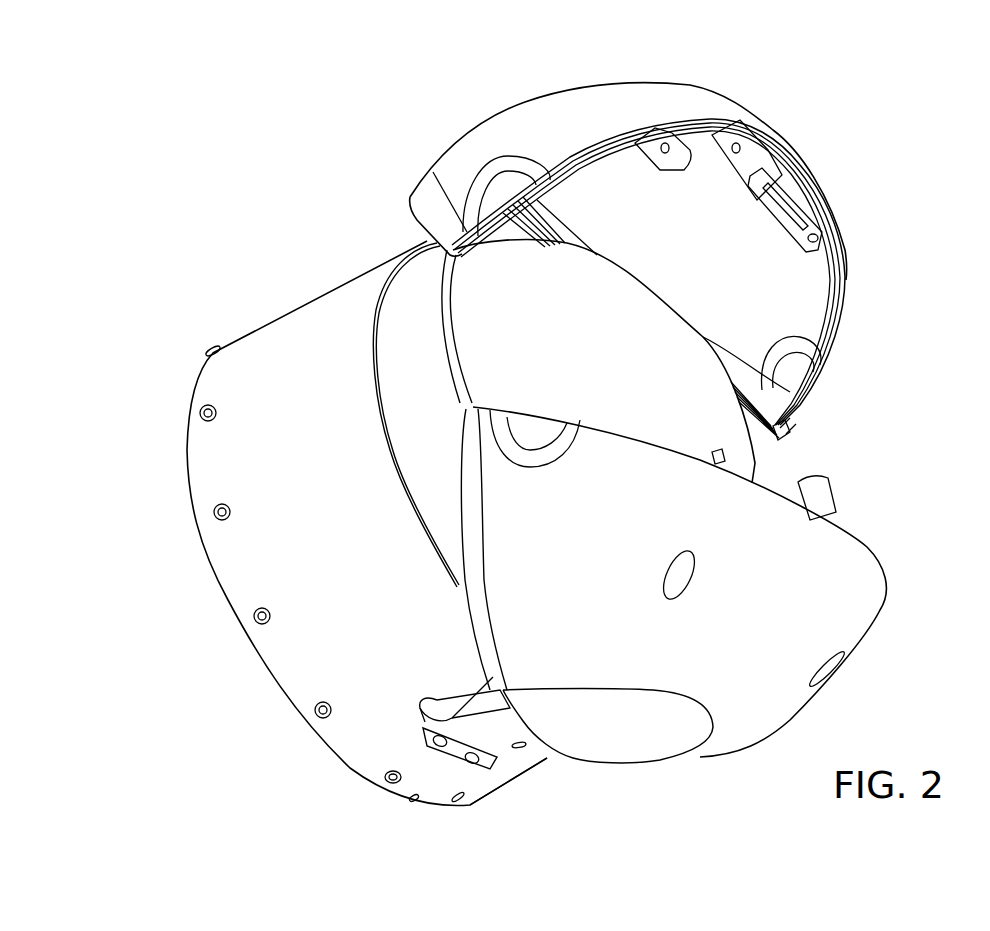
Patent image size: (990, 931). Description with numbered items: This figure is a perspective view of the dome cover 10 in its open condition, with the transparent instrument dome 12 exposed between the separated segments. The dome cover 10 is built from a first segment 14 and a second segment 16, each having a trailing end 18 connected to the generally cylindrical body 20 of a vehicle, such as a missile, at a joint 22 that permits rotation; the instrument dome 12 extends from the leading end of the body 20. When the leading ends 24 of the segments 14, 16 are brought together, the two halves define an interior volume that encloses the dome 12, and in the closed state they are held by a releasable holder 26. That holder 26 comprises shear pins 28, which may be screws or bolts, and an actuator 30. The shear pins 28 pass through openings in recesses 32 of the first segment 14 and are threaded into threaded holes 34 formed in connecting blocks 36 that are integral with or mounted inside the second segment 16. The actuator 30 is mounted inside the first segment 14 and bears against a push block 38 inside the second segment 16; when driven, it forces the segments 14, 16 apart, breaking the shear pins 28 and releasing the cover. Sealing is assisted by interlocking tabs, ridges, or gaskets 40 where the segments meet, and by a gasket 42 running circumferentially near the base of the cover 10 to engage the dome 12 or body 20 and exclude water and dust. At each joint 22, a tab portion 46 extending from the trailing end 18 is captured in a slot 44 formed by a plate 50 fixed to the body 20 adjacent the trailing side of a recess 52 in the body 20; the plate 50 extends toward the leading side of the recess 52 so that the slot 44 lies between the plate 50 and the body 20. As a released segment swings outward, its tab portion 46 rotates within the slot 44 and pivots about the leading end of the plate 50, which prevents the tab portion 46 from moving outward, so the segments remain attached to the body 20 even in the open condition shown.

The dome cover 10 is at (882, 180).
The instrument dome 12 is at (584, 366).
The first segment 14 is at (870, 592).
The second segment 16 is at (468, 152).
The trailing ends 18 is at (396, 199).
The body 20 is at (367, 523).
The joints 22 is at (410, 706).
The leading ends 24 is at (808, 135).
The releasable holder 26 is at (884, 512).
The shear pins 28 is at (714, 450).
The actuator 30 is at (824, 498).
The recesses 32 is at (671, 588).
The threaded holes 34 is at (666, 158).
The connecting blocks 36 is at (645, 138).
The push block 38 is at (730, 158).
The gaskets 40 is at (780, 425).
The gasket 42 is at (776, 436).
The slot 44 is at (420, 719).
The tab portion 46 is at (487, 737).
The plate 50 is at (455, 748).
The recess 52 is at (432, 702).